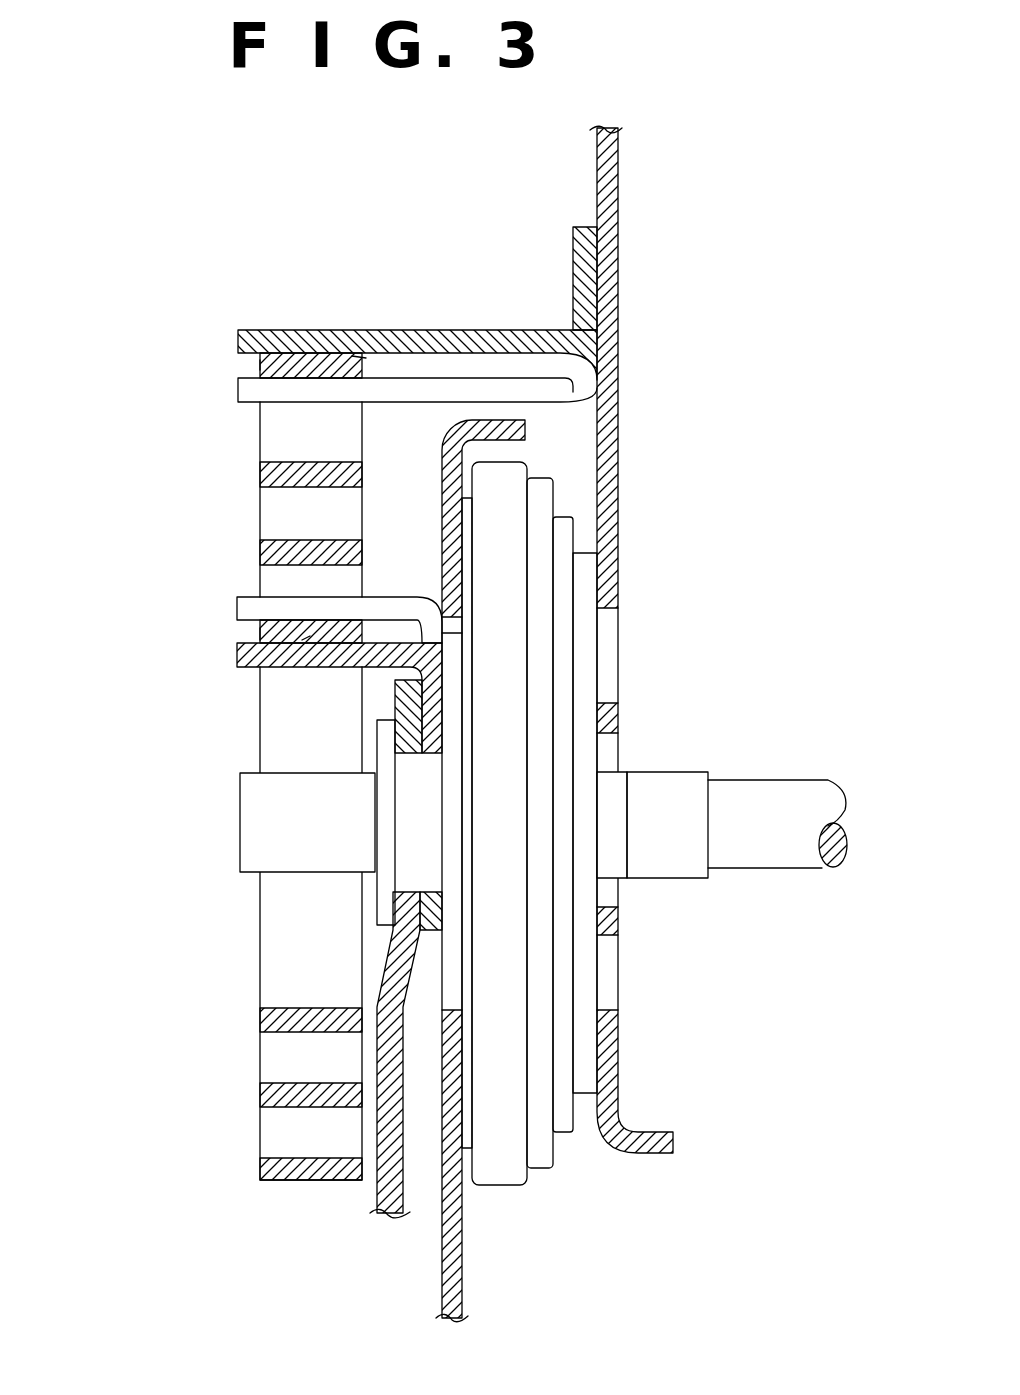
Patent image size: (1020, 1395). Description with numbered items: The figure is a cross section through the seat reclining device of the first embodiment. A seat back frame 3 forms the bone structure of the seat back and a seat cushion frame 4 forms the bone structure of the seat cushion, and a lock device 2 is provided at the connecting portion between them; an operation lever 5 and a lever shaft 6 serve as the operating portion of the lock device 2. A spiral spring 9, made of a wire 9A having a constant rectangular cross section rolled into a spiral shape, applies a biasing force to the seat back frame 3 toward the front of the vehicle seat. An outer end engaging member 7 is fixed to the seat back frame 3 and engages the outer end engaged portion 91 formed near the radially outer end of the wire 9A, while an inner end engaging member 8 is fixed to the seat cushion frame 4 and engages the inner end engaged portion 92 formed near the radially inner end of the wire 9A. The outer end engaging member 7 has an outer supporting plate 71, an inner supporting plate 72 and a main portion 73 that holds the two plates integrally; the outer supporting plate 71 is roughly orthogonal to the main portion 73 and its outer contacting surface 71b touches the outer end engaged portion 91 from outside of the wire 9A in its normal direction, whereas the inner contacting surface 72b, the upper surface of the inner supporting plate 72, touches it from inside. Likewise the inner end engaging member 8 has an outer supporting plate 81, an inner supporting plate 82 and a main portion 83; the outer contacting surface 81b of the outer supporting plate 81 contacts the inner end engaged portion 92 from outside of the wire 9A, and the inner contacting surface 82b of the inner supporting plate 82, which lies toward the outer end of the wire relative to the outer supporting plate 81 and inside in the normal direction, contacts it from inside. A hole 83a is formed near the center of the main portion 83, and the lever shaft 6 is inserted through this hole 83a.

The lock device 2 is at (512, 1192).
The seat back frame 3 is at (620, 178).
The seat cushion frame 4 is at (445, 1272).
The operation lever 5 is at (385, 1185).
The lever shaft 6 is at (683, 778).
The outer end engaging member 7 is at (355, 315).
The outer supporting plate 71 is at (243, 340).
The inner supporting plate 72 is at (243, 388).
The main portion 73 is at (573, 262).
The outer contacting surface 71b is at (366, 358).
The inner contacting surface 72b is at (298, 355).
The outer end engaged portion 91 is at (260, 367).
The inner end engaged portion 92 is at (260, 634).
The inner end engaging member 8 is at (317, 702).
The outer supporting plate 81 is at (243, 605).
The inner supporting plate 82 is at (243, 655).
The outer contacting surface 81b is at (302, 640).
The inner contacting surface 82b is at (320, 623).
The main portion 83 is at (432, 715).
The hole 83a is at (430, 893).
The spiral spring 9 is at (252, 830).
The wire 9A is at (292, 1182).